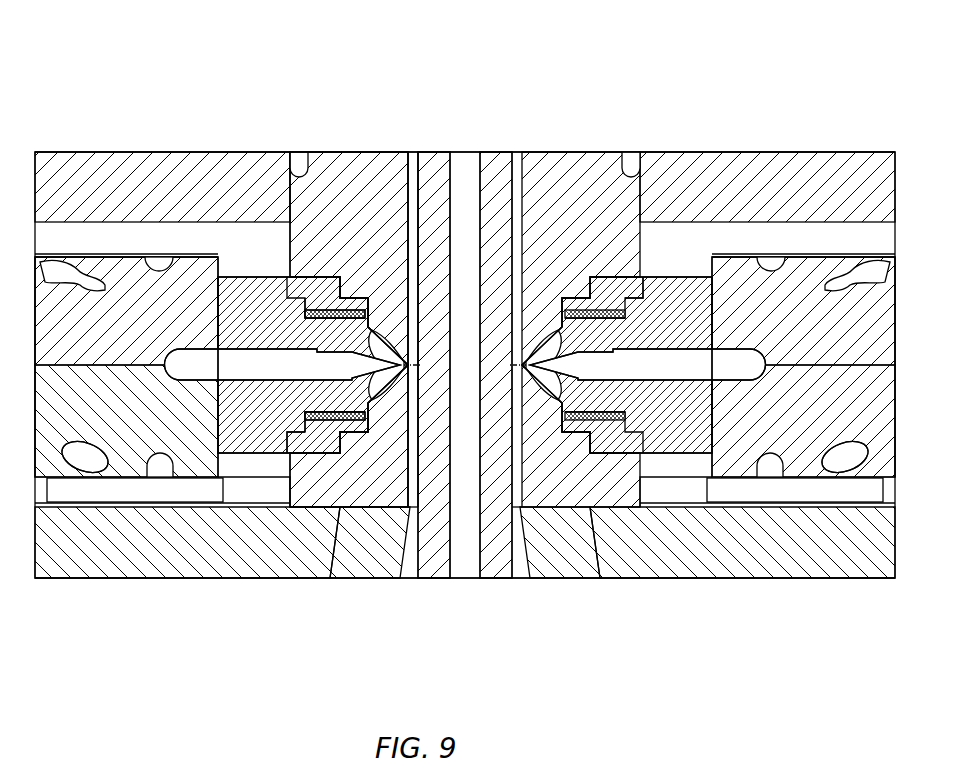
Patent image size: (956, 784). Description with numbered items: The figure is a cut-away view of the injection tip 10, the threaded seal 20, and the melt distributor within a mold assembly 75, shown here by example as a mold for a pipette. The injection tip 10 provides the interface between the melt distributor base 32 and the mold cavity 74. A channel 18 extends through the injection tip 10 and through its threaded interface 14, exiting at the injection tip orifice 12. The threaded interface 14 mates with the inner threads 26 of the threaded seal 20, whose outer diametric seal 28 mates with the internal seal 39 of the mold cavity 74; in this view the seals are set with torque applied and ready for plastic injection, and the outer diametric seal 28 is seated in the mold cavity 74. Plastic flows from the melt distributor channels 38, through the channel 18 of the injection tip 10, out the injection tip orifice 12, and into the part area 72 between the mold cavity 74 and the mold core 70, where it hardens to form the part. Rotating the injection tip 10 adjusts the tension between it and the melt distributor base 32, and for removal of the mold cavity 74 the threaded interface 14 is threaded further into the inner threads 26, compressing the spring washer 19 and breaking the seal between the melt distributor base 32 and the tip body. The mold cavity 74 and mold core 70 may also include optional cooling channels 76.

The injection tip 10 is at (465, 365).
The injection tip orifice 12 is at (392, 350).
The threaded interface 14 is at (320, 432).
The channel 18 is at (240, 363).
The spring washer 19 is at (288, 447).
The threaded seal 20 is at (322, 292).
The inner threads 26 is at (328, 420).
The outer diametric seal 28 is at (590, 448).
The melt distributor base 32 is at (105, 320).
The melt distributor channels 38 is at (205, 375).
The internal seal 39 is at (595, 455).
The mold core 70 is at (437, 152).
The part area 72 is at (415, 152).
The mold cavity 74 is at (378, 152).
The mold assembly 75 is at (435, 87).
The cooling channels 76 is at (472, 152).